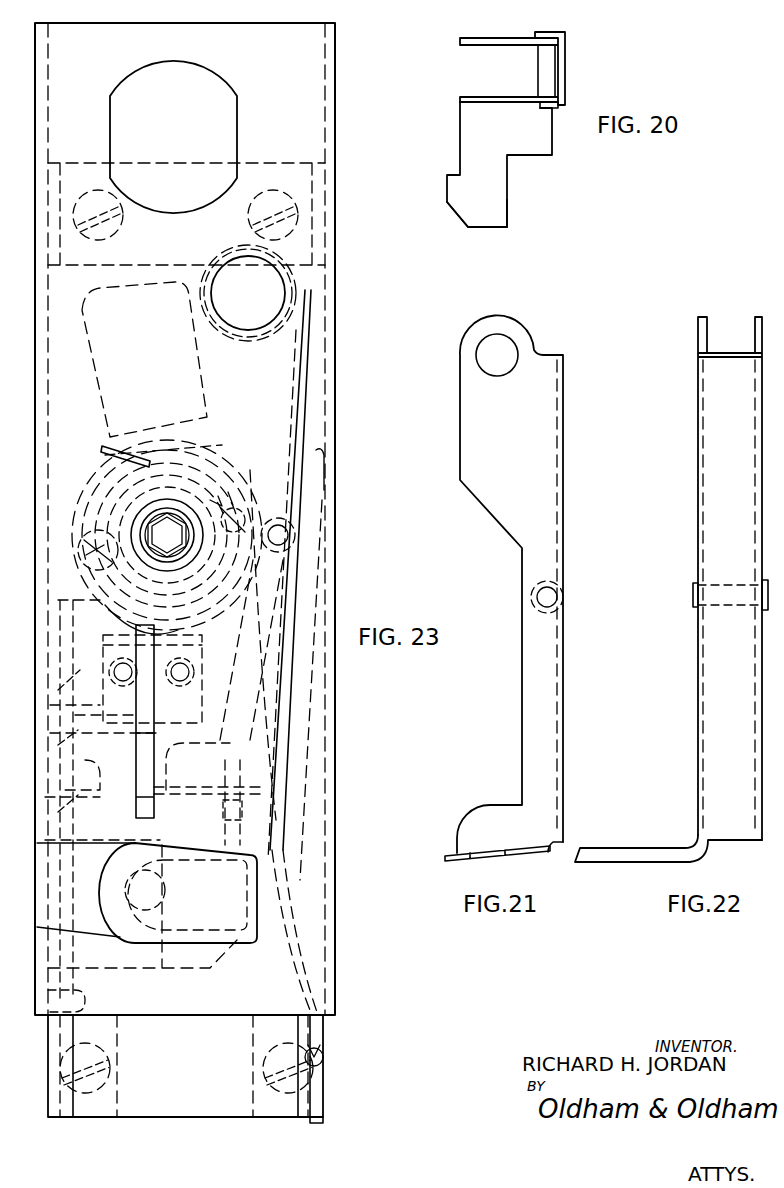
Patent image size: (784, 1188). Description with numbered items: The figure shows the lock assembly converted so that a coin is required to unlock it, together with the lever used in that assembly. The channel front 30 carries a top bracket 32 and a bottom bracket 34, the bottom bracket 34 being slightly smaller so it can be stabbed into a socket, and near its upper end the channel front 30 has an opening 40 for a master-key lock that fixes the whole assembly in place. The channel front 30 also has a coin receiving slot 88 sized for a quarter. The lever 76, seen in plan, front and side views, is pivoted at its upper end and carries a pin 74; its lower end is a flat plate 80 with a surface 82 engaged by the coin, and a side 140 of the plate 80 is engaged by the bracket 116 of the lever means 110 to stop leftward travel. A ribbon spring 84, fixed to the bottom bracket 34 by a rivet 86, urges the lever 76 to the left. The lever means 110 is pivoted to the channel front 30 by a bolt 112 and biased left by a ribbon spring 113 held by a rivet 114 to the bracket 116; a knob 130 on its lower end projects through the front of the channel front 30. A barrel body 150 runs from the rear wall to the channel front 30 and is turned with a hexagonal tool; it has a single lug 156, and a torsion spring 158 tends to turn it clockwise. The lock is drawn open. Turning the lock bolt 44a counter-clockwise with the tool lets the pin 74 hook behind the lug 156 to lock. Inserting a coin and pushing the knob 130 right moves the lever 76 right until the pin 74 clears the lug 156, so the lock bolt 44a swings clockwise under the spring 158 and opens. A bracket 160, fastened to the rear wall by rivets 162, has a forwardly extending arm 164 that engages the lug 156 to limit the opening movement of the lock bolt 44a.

In FIG. 23, the channel front 30 is at (62, 128).
In FIG. 23, the top bracket 32 is at (193, 163).
In FIG. 23, the bottom bracket 34 is at (128, 1122).
In FIG. 23, the opening 40 is at (112, 115).
In FIG. 23, the lock bolt 44a is at (136, 368).
In FIG. 23, the pin 74 is at (292, 535).
In FIG. 20, the pin 74 is at (540, 66).
In FIG. 21, the pin 74 is at (558, 598).
In FIG. 22, the pin 74 is at (696, 598).
In FIG. 23, the lever 76 is at (310, 388).
In FIG. 20, the lever 76 is at (516, 33).
In FIG. 21, the lever 76 is at (575, 493).
In FIG. 22, the lever 76 is at (690, 494).
In FIG. 20, the flat plate 80 is at (495, 196).
In FIG. 21, the flat plate 80 is at (560, 834).
In FIG. 20, the surface 82 is at (447, 201).
In FIG. 21, the surface 82 is at (445, 856).
In FIG. 23, the ribbon spring 84 is at (280, 822).
In FIG. 23, the rivet 86 is at (324, 1060).
In FIG. 23, the coin receiving slot 88 is at (136, 778).
In FIG. 23, the lever means 110 is at (312, 281).
In FIG. 23, the bolt 112 is at (233, 262).
In FIG. 23, the ribbon spring 113 is at (310, 573).
In FIG. 23, the rivet 114 is at (223, 810).
In FIG. 23, the bracket 116 is at (225, 770).
In FIG. 23, the knob 130 is at (255, 884).
In FIG. 20, the side 140 is at (507, 213).
In FIG. 23, the barrel body 150 is at (226, 458).
In FIG. 23, the lug 156 is at (248, 650).
In FIG. 23, the torsion spring 158 is at (140, 440).
In FIG. 23, the bracket 160 is at (115, 724).
In FIG. 23, the rivets 162 is at (132, 680).
In FIG. 23, the arm 164 is at (207, 612).